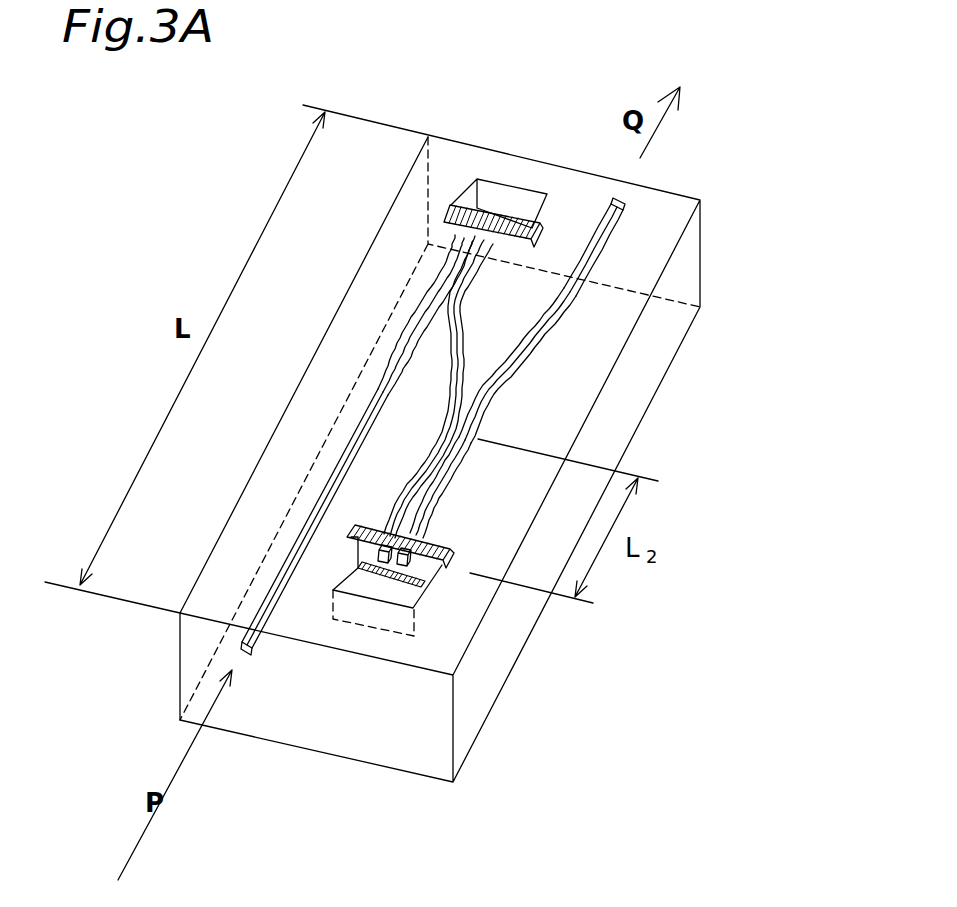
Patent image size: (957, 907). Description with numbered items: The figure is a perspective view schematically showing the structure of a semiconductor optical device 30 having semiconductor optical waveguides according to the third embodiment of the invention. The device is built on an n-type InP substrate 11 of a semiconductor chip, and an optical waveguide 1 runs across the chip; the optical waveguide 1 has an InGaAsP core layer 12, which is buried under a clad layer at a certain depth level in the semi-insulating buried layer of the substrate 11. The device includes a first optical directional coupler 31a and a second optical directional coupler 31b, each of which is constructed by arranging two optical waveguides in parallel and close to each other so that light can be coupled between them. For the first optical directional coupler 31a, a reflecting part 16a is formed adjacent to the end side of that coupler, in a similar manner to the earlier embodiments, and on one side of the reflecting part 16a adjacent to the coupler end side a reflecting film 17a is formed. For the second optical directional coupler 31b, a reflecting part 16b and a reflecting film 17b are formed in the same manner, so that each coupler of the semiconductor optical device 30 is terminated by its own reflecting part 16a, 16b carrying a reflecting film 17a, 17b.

The semiconductor optical device 30 is at (752, 120).
The n-type InP substrate 11 is at (428, 753).
The InGaAsP core layer 12 is at (238, 648).
The optical waveguide 1 is at (562, 318).
The reflecting part 16a is at (508, 202).
The reflecting part 16b is at (393, 588).
The reflecting film 17a is at (451, 206).
The reflecting film 17b is at (347, 541).
The first optical directional coupler 31a is at (434, 302).
The second optical directional coupler 31b is at (458, 468).